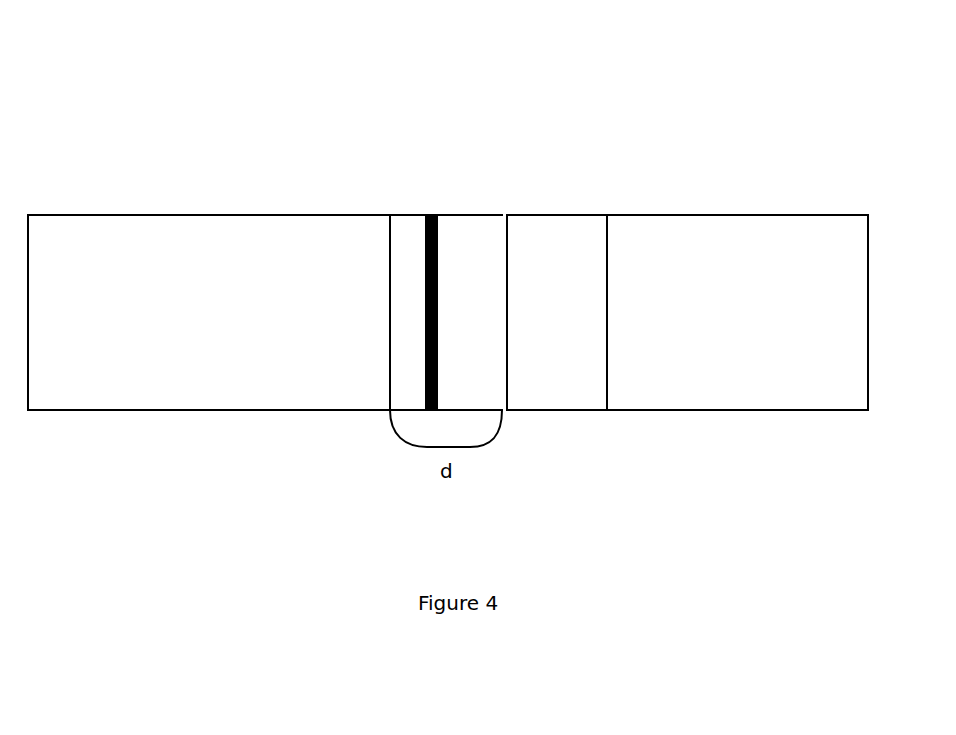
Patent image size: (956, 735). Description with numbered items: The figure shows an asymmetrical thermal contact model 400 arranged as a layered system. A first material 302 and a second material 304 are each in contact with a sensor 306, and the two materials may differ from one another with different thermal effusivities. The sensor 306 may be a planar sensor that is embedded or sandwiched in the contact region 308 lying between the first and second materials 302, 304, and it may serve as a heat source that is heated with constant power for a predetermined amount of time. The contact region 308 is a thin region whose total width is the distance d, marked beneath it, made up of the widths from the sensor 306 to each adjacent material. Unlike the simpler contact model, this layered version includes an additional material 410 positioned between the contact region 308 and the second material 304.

The asymmetrical thermal contact model 400 is at (105, 32).
The first material 302 is at (118, 241).
The second material 304 is at (748, 226).
The sensor 306 is at (431, 212).
The contact region 308 is at (415, 397).
The additional material 410 is at (552, 252).